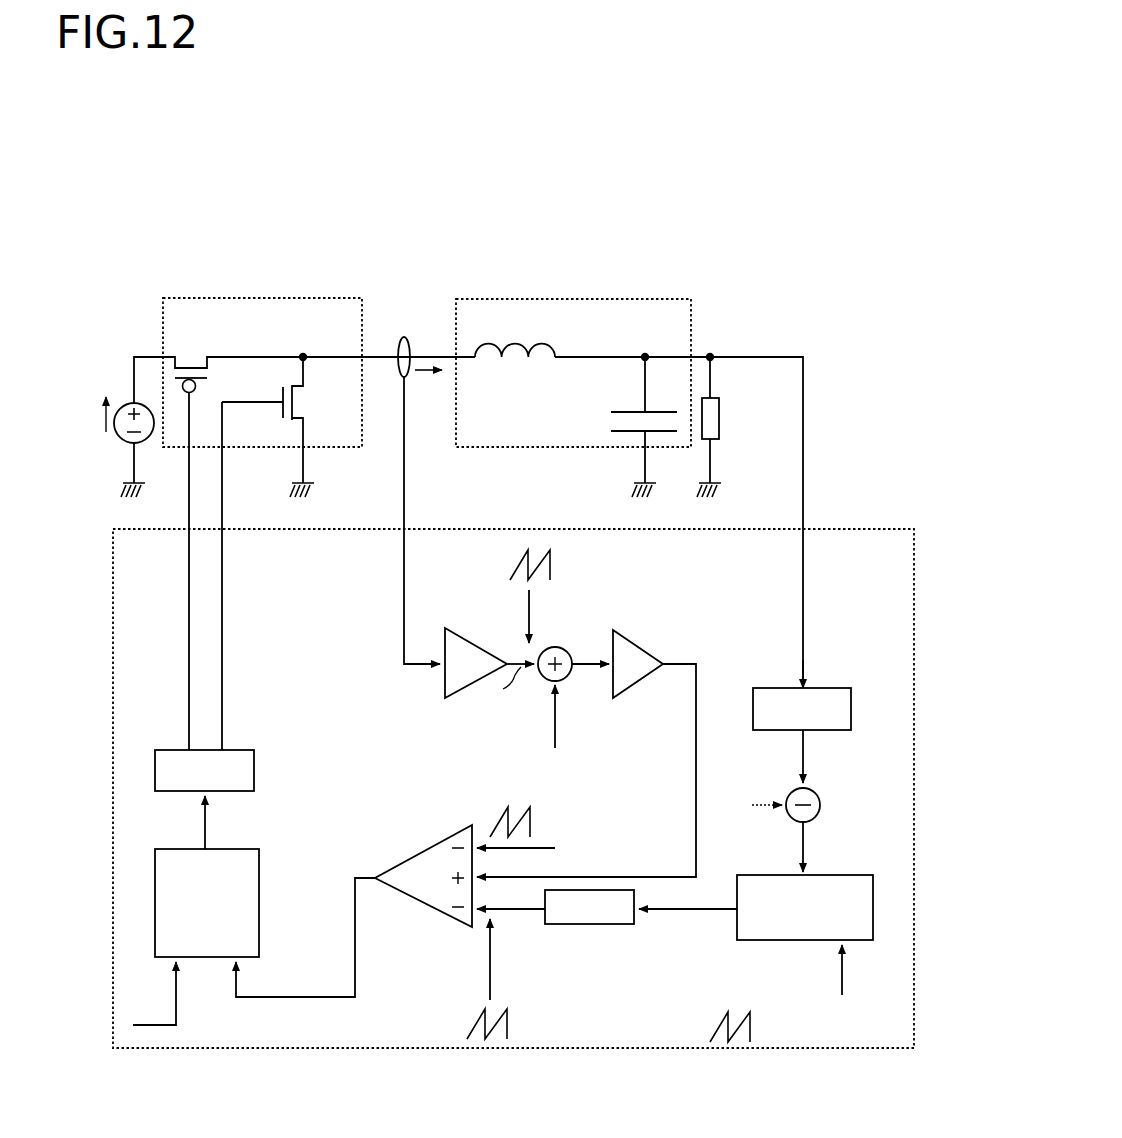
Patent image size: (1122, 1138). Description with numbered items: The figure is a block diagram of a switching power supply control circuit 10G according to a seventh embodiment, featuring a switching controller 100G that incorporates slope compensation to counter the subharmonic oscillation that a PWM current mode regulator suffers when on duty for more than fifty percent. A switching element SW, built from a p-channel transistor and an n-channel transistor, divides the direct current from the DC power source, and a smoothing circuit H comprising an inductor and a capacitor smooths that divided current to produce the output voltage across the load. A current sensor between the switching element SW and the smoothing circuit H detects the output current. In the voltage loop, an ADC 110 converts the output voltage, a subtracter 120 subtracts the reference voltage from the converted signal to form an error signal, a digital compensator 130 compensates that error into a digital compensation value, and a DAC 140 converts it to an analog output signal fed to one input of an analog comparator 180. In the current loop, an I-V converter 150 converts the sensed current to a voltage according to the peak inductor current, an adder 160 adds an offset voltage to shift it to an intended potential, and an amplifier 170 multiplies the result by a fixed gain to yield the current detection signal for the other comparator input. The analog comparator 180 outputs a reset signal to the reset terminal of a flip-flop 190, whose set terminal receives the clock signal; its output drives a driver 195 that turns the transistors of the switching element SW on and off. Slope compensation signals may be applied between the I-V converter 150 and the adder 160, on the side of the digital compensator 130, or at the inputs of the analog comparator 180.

The switching power supply control circuit 10G is at (537, 211).
The switching controller 100G is at (843, 529).
The ADC 110 is at (813, 688).
The subtracter 120 is at (783, 795).
The digital compensator 130 is at (752, 940).
The DAC 140 is at (590, 925).
The I-V converter 150 is at (488, 647).
The adder 160 is at (565, 647).
The amplifier 170 is at (632, 646).
The analog comparator 180 is at (425, 912).
The flip-flop 190 is at (259, 902).
The driver 195 is at (254, 768).
The switching element SW is at (292, 298).
The smoothing circuit H is at (603, 299).